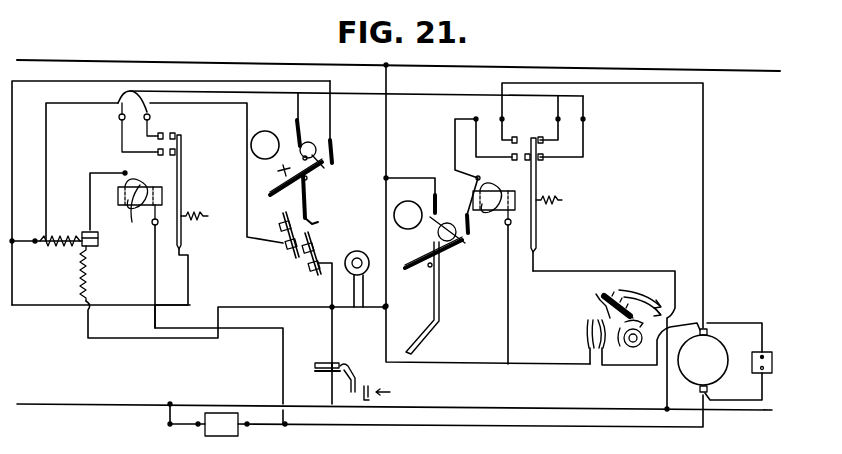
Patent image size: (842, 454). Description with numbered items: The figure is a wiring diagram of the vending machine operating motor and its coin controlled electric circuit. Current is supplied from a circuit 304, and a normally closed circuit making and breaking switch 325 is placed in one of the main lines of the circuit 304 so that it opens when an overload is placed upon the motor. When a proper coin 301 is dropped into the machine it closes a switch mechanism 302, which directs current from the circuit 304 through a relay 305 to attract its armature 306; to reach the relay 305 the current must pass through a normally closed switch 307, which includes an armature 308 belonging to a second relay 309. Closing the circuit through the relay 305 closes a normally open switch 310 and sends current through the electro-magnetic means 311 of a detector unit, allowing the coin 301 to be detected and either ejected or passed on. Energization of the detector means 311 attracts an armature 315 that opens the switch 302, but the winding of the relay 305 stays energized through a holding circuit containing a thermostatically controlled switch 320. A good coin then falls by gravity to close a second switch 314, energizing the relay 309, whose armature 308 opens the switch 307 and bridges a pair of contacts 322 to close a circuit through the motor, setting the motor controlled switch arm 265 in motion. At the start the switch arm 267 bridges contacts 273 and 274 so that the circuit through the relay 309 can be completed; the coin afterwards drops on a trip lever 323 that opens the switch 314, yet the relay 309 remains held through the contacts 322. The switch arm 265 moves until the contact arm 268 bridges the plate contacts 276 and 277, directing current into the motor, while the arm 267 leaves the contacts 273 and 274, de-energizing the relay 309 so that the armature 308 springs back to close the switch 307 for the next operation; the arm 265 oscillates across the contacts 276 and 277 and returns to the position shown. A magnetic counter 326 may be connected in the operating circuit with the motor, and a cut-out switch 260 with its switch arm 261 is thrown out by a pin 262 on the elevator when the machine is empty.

The circuit 304 is at (499, 67).
The normally open switch 310 is at (172, 130).
The armature 306 is at (181, 193).
The relay 305 is at (143, 208).
The thermostatically controlled switch 320 is at (90, 252).
The coin 301 is at (336, 180).
The switch mechanism 302 is at (312, 168).
The armature 315 is at (320, 227).
The electro-magnetic means 311 is at (290, 258).
The cut-out switch 260 is at (319, 355).
The depending pin 261 is at (360, 391).
The pin 262 is at (370, 401).
The circuit making and breaking switch 325 is at (230, 432).
The contacts 322 is at (527, 130).
The normally closed switch 307 is at (545, 151).
The armature 308 is at (538, 233).
The second switch 314 is at (452, 212).
The trip lever 323 is at (440, 330).
The relay 309 is at (500, 211).
The plate contact 276 is at (587, 331).
The plate contact 277 is at (599, 318).
The switch arm 268 is at (591, 299).
The switch arm 267 is at (632, 297).
The contact 273 is at (647, 297).
The switch arm 265 is at (628, 343).
The contact 274 is at (698, 317).
The magnetic counter 326 is at (772, 373).